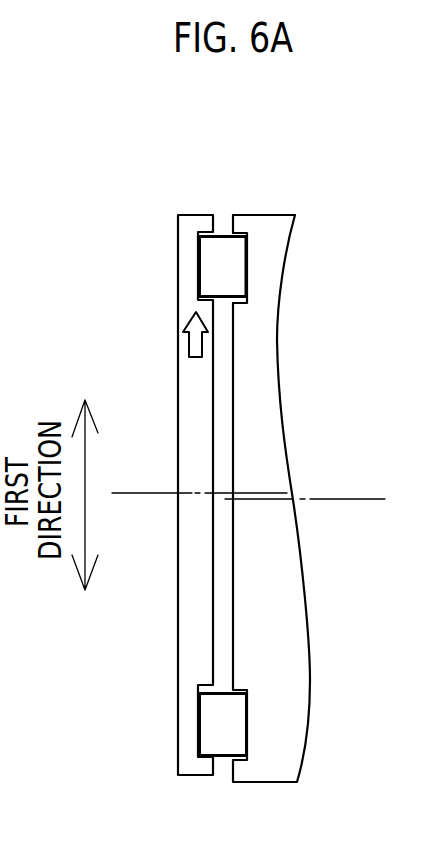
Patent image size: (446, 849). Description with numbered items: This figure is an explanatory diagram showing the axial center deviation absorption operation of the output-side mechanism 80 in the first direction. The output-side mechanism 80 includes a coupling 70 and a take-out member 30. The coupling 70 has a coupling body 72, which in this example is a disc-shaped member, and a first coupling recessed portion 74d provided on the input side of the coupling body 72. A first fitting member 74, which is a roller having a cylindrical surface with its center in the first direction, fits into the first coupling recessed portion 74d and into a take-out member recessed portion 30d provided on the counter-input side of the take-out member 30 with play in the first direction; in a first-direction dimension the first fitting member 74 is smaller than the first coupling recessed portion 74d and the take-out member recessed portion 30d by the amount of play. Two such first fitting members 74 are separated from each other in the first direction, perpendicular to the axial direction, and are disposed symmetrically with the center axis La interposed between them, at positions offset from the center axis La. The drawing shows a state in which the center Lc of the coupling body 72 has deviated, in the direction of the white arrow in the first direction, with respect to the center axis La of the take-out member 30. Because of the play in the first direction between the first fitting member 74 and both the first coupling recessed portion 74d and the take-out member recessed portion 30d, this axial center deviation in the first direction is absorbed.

The output-side mechanism 80 is at (357, 142).
The coupling 70 is at (245, 175).
The coupling body 72 is at (186, 228).
The first fitting member 74 is at (148, 442).
The first coupling recessed portion 74d is at (199, 296).
The take-out member 30 is at (257, 230).
The take-out member recessed portion 30d is at (247, 246).
The center of the coupling body Lc is at (142, 492).
The center axis La is at (358, 497).